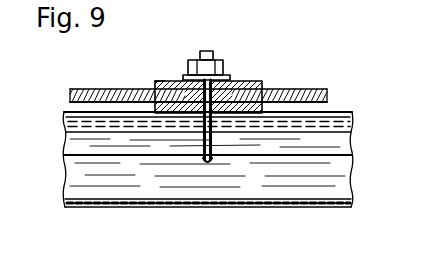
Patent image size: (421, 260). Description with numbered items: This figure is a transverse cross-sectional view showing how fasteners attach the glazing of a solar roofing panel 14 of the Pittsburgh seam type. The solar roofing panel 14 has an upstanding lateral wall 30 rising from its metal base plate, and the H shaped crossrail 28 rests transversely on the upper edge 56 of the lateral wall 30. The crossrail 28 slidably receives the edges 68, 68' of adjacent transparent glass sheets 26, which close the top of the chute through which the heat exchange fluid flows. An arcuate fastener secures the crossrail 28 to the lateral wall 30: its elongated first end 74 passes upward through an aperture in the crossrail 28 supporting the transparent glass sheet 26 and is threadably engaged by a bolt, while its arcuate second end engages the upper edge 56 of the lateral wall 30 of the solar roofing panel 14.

The solar roofing panel 14 is at (260, 206).
The transparent glass sheet 26 is at (285, 91).
The H shaped crossrail 28 is at (158, 81).
The upstanding lateral wall 30 is at (335, 172).
The upper edge of lateral wall 56 is at (332, 127).
The edge of transparent glass sheet 68 is at (173, 70).
The edge of transparent glass sheet 68' is at (243, 70).
The elongated first end of arcuate fastener 74 is at (200, 52).